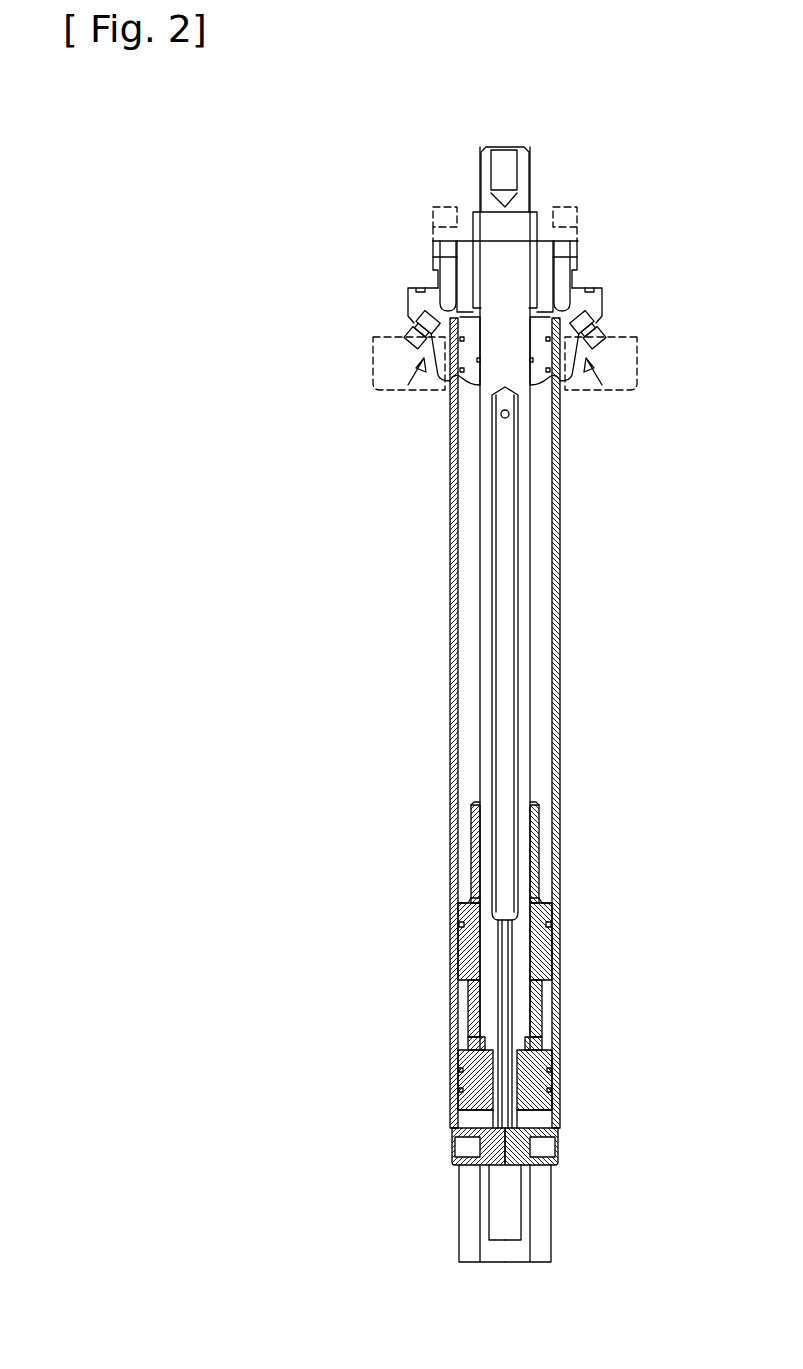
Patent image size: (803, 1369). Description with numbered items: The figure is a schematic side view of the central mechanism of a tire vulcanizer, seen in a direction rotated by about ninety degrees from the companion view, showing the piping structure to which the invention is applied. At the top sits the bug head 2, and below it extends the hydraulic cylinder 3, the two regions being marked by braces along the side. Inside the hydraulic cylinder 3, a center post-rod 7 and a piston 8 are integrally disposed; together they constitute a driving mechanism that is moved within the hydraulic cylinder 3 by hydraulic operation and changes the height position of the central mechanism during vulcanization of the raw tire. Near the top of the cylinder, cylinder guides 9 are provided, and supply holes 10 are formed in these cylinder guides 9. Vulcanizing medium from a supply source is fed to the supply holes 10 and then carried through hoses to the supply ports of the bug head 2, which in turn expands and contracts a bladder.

The bug head 2 is at (660, 145).
The hydraulic cylinder 3 is at (660, 290).
The center post-rod 7 is at (488, 624).
The piston 8 is at (458, 933).
The cylinder guide 9 is at (407, 303).
The supply hole 10 is at (440, 289).